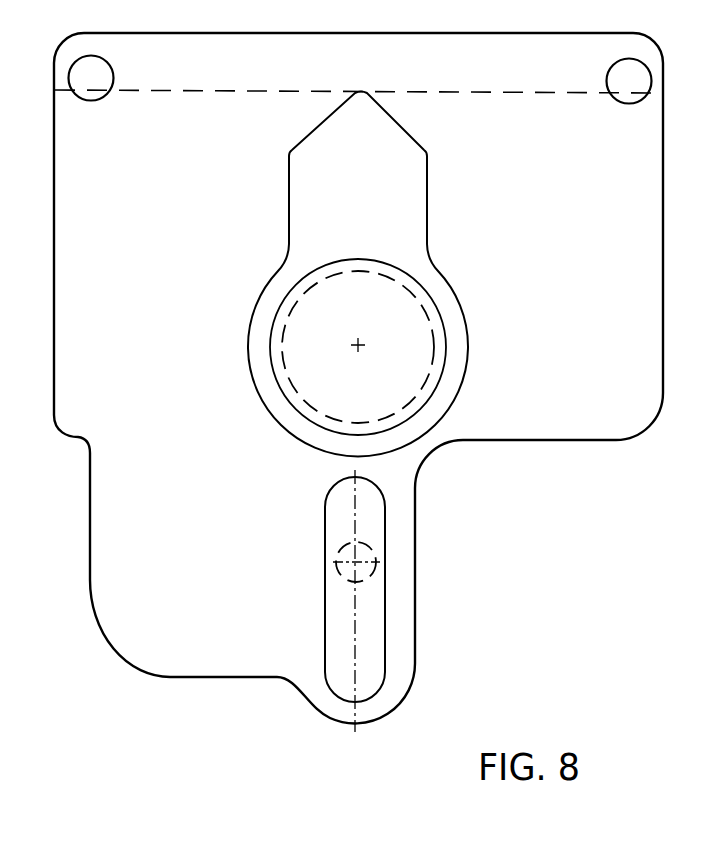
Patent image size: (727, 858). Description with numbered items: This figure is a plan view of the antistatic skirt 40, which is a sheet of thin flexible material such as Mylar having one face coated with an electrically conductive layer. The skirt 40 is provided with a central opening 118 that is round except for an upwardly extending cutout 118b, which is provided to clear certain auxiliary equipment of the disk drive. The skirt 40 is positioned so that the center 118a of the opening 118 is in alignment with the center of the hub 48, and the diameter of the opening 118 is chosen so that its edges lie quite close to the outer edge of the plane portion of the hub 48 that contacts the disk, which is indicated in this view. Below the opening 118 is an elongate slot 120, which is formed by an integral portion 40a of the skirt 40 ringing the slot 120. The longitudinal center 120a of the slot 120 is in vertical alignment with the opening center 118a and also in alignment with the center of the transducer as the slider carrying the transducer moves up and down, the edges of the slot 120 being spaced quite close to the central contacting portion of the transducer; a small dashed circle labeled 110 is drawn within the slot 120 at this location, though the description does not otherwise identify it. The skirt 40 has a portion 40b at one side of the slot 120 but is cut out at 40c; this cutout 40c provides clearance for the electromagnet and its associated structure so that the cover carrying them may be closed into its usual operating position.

The skirt 40 is at (90, 452).
The integral portion 40a is at (393, 691).
The portion 40b is at (203, 503).
The cutout 40c is at (532, 442).
The hub 48 is at (348, 256).
The locating pin hole 110 is at (378, 562).
The central opening 118 is at (450, 287).
The center of the opening 118a is at (357, 332).
The upwardly extending cutout 118b is at (387, 152).
The elongate slot 120 is at (326, 517).
The longitudinal center of the slot 120a is at (353, 631).